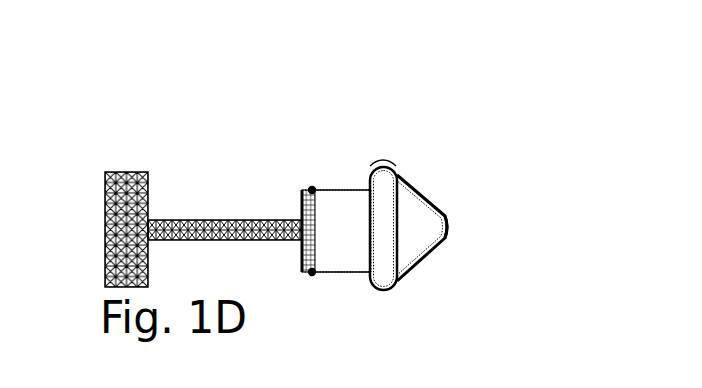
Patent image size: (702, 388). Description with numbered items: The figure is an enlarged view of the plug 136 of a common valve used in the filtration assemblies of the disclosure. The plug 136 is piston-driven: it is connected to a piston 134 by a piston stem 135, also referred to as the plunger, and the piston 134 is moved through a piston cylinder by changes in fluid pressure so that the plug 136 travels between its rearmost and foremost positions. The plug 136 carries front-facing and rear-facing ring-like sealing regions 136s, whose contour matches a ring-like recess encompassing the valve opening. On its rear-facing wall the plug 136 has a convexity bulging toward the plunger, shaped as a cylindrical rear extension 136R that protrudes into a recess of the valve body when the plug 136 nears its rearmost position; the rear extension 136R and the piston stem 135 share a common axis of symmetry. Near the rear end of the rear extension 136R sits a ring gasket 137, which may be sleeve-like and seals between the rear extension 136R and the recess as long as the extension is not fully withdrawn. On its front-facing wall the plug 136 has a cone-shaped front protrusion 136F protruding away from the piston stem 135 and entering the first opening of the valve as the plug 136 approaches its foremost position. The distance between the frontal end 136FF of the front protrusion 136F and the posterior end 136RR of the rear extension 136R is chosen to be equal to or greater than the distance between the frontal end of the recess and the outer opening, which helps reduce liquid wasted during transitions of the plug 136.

The piston 134 is at (104, 249).
The piston stem 135 is at (207, 216).
The plug 136 is at (382, 265).
The ring-like sealing region 136s is at (394, 160).
The front protrusion 136F is at (437, 195).
The frontal end of the front protrusion 136FF is at (449, 228).
The rear extension 136R is at (337, 237).
The posterior end of the rear protrusion 136RR is at (300, 263).
The ring gasket 137 is at (311, 187).